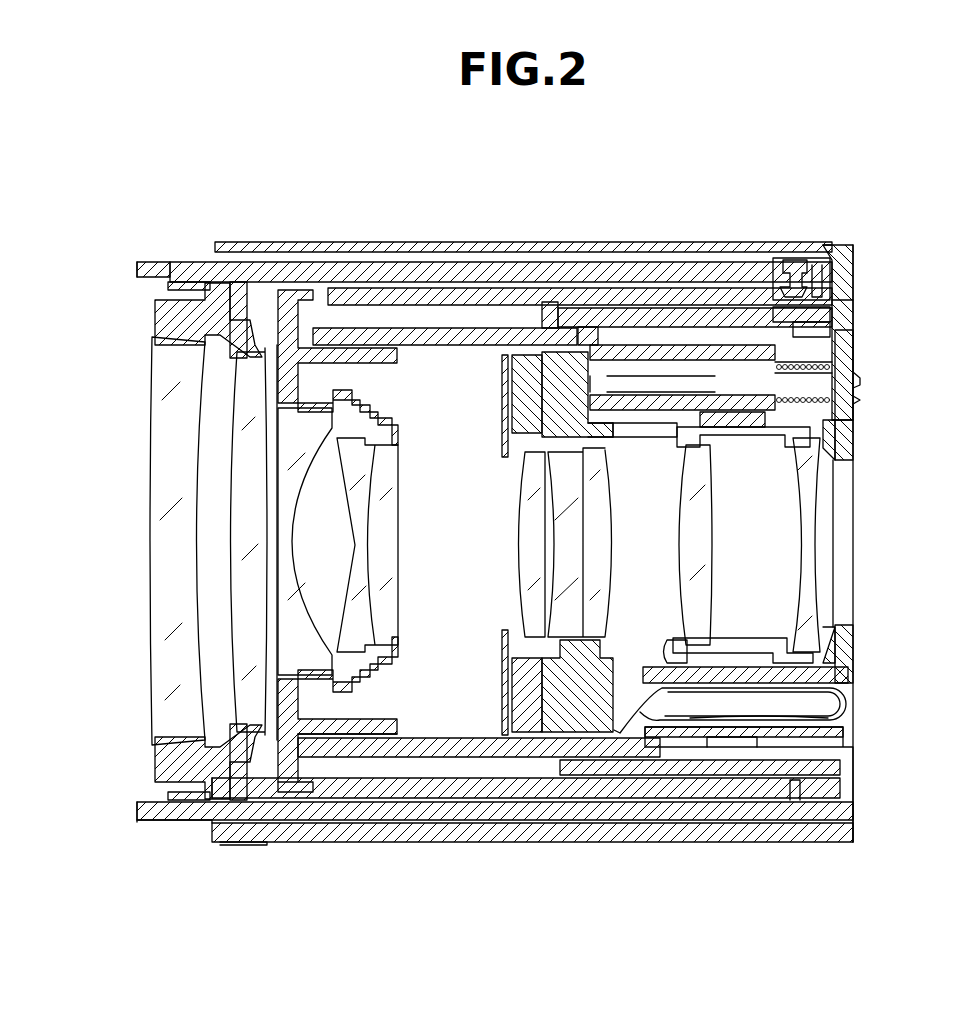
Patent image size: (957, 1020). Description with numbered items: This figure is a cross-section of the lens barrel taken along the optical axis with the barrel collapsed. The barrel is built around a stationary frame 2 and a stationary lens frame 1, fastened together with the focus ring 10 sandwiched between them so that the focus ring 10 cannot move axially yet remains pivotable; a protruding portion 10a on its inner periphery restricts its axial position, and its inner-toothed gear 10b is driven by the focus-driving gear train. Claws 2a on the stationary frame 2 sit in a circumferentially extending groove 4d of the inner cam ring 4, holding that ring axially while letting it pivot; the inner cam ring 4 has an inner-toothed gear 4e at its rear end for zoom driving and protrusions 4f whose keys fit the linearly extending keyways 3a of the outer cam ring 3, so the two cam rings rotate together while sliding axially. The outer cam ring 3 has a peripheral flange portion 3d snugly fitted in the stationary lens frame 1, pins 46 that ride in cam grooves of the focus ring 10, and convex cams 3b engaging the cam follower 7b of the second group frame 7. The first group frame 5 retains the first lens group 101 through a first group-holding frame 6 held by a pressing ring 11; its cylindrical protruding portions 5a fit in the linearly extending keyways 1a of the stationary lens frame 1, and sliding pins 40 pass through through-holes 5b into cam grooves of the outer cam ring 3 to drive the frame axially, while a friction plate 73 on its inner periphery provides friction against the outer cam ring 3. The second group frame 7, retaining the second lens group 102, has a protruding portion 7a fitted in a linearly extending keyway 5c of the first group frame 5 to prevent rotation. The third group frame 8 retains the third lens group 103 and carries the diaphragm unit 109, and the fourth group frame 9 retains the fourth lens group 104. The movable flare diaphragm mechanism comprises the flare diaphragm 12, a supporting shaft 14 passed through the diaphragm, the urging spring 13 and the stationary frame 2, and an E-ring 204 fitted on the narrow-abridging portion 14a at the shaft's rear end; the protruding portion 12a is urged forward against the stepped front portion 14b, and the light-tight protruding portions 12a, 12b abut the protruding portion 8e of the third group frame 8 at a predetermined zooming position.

The stationary lens frame 1 is at (845, 312).
The linearly extending keyways 1a is at (447, 247).
The stationary frame 2 is at (853, 362).
The claws 2a is at (612, 318).
The outer cam ring 3 is at (450, 790).
The linearly extending keyways 3a is at (410, 296).
The convex cams 3b is at (395, 808).
The peripheral flange portion 3d is at (840, 262).
The inner cam ring 4 is at (483, 336).
The circumferentially extending groove 4d is at (586, 330).
The inner-toothed gear 4e is at (852, 702).
The protrusions 4f is at (372, 300).
The first group frame 5 is at (200, 266).
The cylindrical protruding portions 5a is at (838, 248).
The through-holes 5b is at (796, 262).
The linearly extending keyway 5c is at (512, 812).
The first group-holding frame 6 is at (286, 360).
The second group frame 7 is at (350, 418).
The protruding portion 7a is at (290, 790).
The cam follower 7b is at (350, 740).
The third group frame 8 is at (605, 440).
The protruding portion 8e is at (505, 420).
The fourth group frame 9 is at (660, 440).
The focus ring 10 is at (680, 315).
The protruding portion 10a is at (834, 370).
The inner-toothed gear 10b is at (832, 330).
The pressing ring 11 is at (158, 318).
The flare diaphragm 12 is at (838, 455).
The protruding portion 12a is at (755, 427).
The protruding portion 12b is at (785, 447).
The urging spring 13 is at (855, 377).
The supporting shaft 14 is at (748, 352).
The narrow-abridging portion 14a is at (855, 396).
The stepped front portion 14b is at (606, 430).
The sliding pins 40 is at (824, 292).
The pins 46 is at (796, 802).
The friction plate 73 is at (745, 312).
The first lens group 101 is at (210, 462).
The second lens group 102 is at (320, 500).
The third lens group 103 is at (590, 578).
The fourth lens group 104 is at (800, 590).
The diaphragm unit 109 is at (512, 395).
The E-ring 204 is at (860, 402).